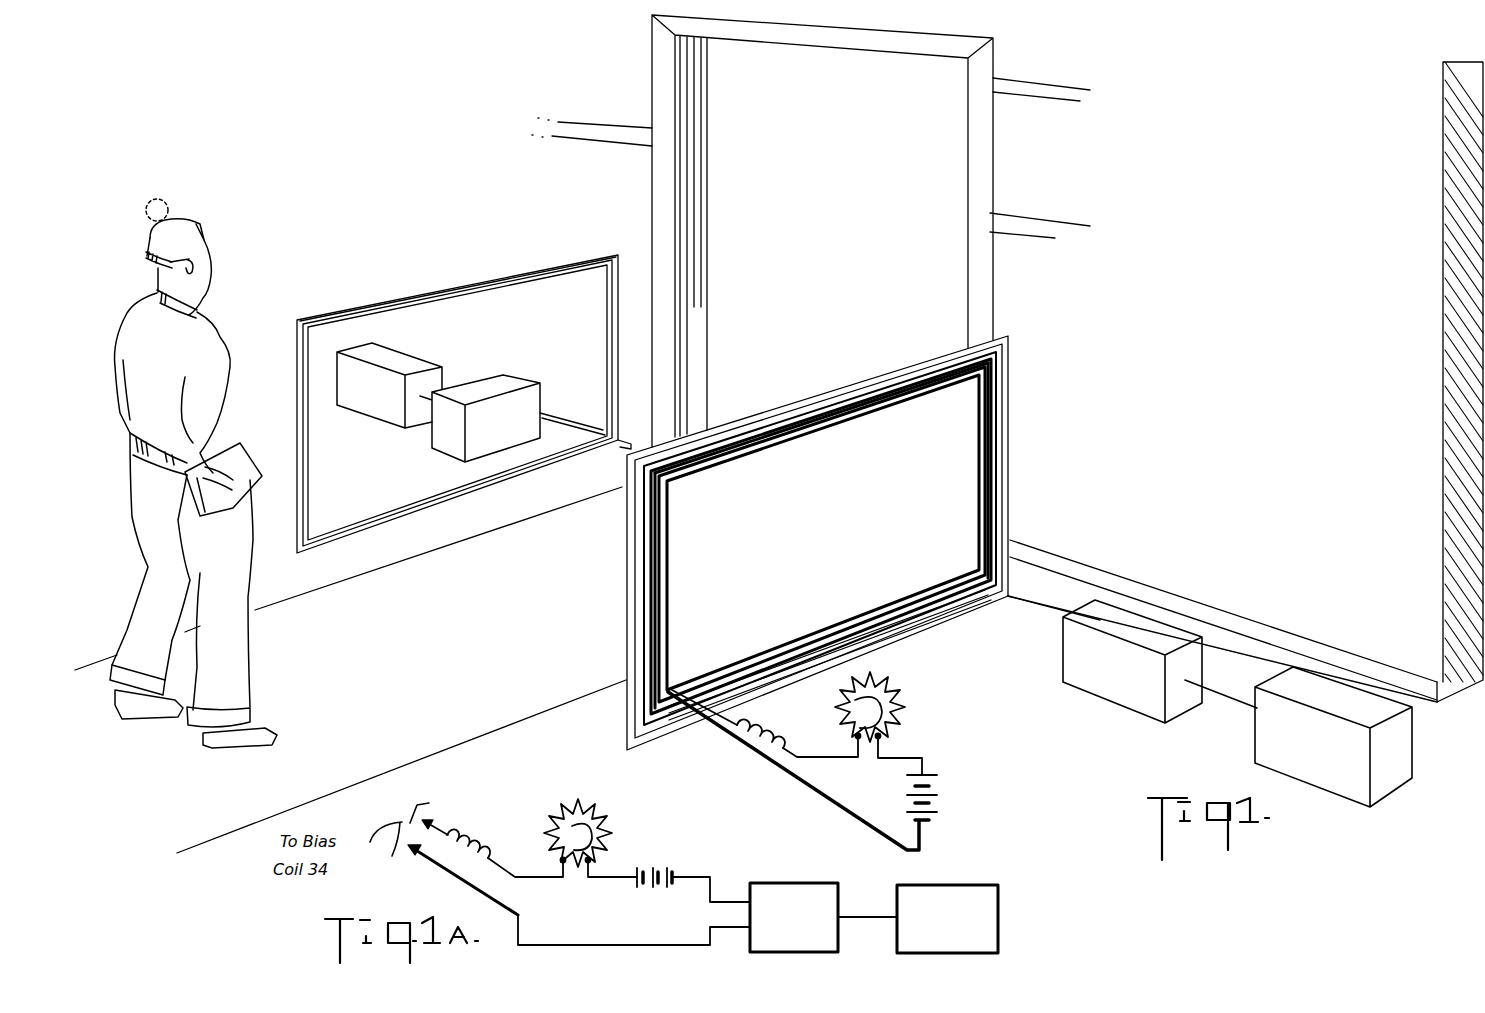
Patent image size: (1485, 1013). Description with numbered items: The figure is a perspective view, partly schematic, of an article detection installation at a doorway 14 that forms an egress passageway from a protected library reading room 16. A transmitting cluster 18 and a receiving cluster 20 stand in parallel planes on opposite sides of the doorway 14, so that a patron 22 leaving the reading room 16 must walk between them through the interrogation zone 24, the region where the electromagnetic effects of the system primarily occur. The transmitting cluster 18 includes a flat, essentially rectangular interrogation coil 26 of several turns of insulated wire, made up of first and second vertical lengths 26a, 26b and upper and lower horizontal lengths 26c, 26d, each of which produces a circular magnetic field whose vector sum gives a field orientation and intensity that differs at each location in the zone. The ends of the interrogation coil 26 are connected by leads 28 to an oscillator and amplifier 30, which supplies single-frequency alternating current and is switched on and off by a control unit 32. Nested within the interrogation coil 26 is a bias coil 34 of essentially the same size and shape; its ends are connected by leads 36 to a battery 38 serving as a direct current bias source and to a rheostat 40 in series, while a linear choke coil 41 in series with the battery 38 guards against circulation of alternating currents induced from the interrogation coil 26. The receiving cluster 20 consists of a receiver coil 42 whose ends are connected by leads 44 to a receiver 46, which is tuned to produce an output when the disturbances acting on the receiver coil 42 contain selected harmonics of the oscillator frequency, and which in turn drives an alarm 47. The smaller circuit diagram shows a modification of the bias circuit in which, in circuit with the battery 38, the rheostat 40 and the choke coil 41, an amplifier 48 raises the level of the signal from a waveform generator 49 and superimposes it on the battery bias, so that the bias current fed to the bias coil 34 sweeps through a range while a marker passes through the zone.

In FIG. 1, the doorway 14 is at (990, 258).
In FIG. 1, the library reading room 16 is at (415, 231).
In FIG. 1, the transmitting cluster 18 is at (1022, 392).
In FIG. 1, the receiving cluster 20 is at (563, 230).
In FIG. 1, the patron 22 is at (230, 270).
In FIG. 1, the interrogation zone 24 is at (565, 582).
In FIG. 1, the interrogation coil 26 is at (1003, 338).
In FIG. 1, the first vertical length 26a is at (623, 620).
In FIG. 1, the second vertical length 26b is at (1014, 462).
In FIG. 1, the upper horizontal length 26c is at (844, 387).
In FIG. 1, the lower horizontal length 26d is at (809, 676).
In FIG. 1, the leads 28 is at (1043, 602).
In FIG. 1, the oscillator and amplifier 30 is at (1157, 713).
In FIG. 1, the control unit 32 is at (1350, 790).
In FIG. 1, the bias coil 34 is at (839, 427).
In FIG. 1, the leads 36 is at (723, 725).
In FIG. 1, the battery 38 is at (938, 795).
In FIG. 1A, the battery 38 is at (663, 870).
In FIG. 1, the rheostat 40 is at (897, 690).
In FIG. 1A, the rheostat 40 is at (607, 817).
In FIG. 1A, the linear choke coil 41 is at (477, 843).
In FIG. 1, the receiver coil 42 is at (455, 288).
In FIG. 1, the leads 44 is at (567, 420).
In FIG. 1, the receiver 46 is at (447, 452).
In FIG. 1, the alarm 47 is at (380, 417).
In FIG. 1A, the amplifier 48 is at (792, 885).
In FIG. 1A, the waveform generator 49 is at (972, 883).